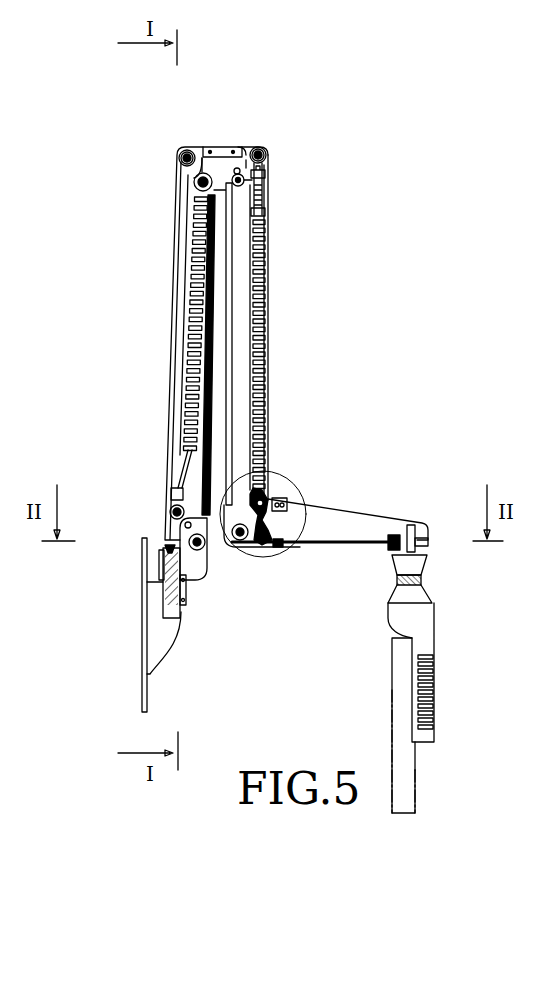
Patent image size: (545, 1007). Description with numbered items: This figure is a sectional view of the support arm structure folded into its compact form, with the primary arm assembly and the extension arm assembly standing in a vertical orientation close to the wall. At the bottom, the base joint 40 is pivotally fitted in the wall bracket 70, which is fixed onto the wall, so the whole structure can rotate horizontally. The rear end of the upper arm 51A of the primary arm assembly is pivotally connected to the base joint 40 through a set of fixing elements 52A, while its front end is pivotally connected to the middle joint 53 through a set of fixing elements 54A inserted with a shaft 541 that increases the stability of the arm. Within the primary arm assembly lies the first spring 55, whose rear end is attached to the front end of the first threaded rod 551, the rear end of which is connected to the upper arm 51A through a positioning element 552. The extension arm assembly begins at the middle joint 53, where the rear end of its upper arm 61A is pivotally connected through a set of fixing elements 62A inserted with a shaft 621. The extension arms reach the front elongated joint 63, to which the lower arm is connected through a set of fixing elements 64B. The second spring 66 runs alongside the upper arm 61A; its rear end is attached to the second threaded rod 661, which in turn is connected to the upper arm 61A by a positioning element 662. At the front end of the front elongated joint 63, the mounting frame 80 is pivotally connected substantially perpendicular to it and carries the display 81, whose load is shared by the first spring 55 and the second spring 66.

The base joint 40 is at (207, 578).
The upper arm 51A is at (172, 328).
The fixing elements 52A is at (170, 512).
The middle joint 53 is at (223, 143).
The fixing elements 54A is at (179, 158).
The shaft 541 is at (188, 149).
The first spring 55 is at (192, 285).
The first threaded rod 551 is at (178, 458).
The positioning element 552 is at (170, 490).
The upper arm 61A is at (268, 332).
The fixing elements 62A is at (268, 155).
The shaft 621 is at (258, 147).
The front elongated joint 63 is at (340, 545).
The fixing elements 64B is at (240, 541).
The second spring 66 is at (266, 282).
The second threaded rod 661 is at (264, 200).
The positioning element 662 is at (266, 175).
The wall bracket 70 is at (180, 628).
The mounting frame 80 is at (435, 622).
The display 81 is at (391, 717).